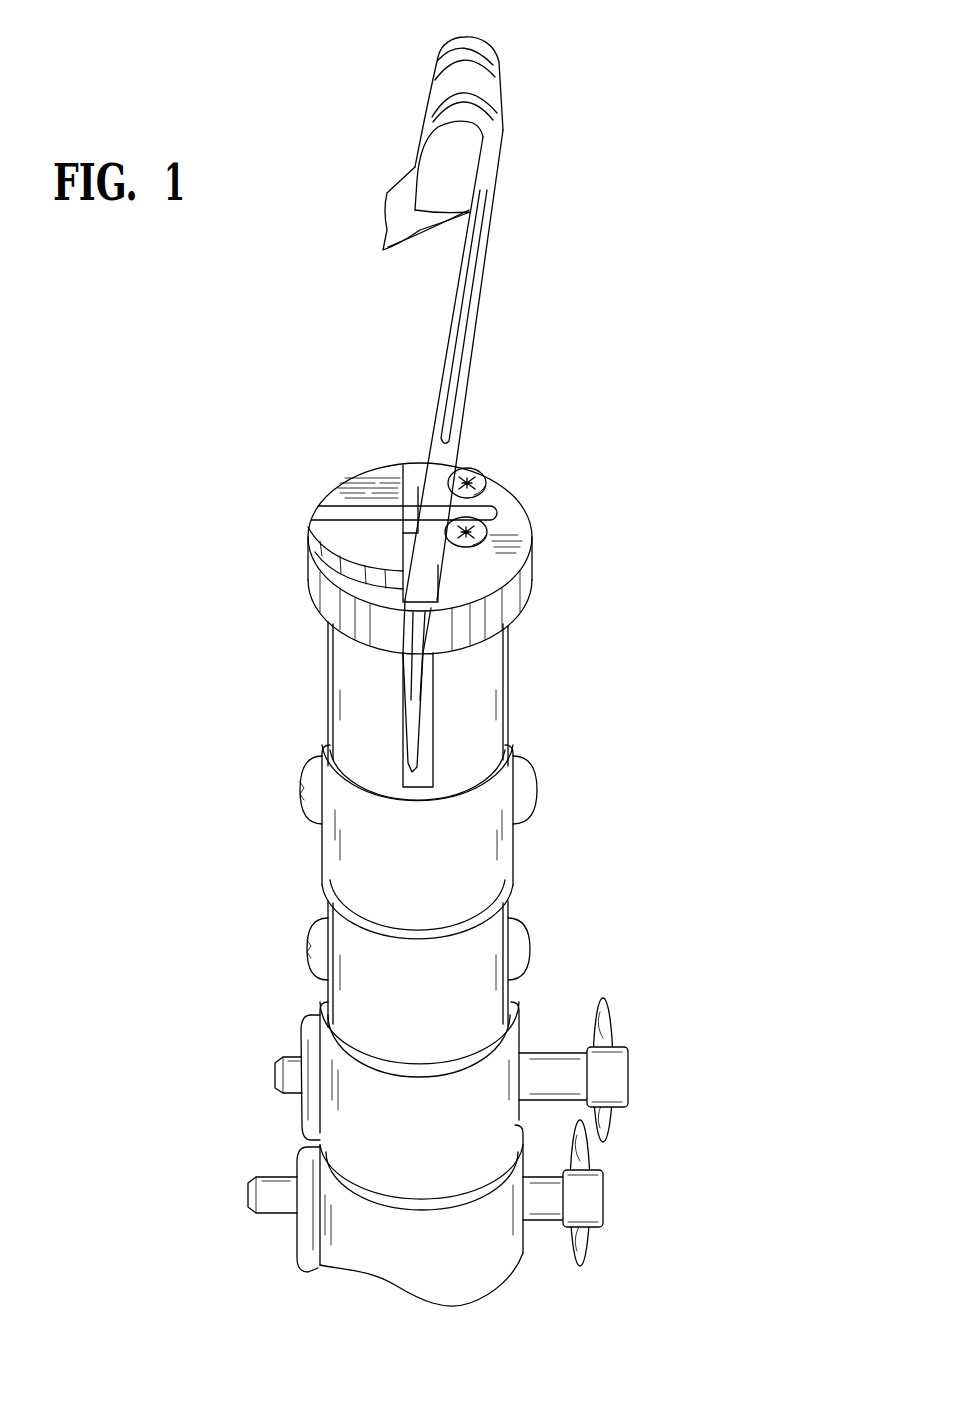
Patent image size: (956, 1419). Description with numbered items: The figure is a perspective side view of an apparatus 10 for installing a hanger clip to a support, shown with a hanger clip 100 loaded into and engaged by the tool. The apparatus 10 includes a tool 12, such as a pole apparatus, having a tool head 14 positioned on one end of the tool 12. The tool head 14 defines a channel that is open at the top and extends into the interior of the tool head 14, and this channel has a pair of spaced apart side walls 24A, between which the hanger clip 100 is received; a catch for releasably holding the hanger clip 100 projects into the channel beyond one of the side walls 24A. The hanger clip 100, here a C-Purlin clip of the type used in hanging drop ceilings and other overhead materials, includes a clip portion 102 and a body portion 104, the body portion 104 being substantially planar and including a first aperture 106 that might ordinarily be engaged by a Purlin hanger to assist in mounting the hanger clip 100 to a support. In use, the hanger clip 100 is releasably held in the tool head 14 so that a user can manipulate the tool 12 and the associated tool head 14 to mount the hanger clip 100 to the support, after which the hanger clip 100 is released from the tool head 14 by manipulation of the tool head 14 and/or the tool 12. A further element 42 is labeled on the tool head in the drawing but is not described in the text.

The apparatus 10 is at (403, 884).
The tool 12 is at (242, 1140).
The tool head 14 is at (465, 625).
The side walls 24A is at (405, 680).
The cap 42 is at (525, 590).
The hanger clip 100 is at (481, 391).
The clip portion 102 is at (488, 88).
The body portion 104 is at (468, 362).
The first aperture 106 is at (426, 492).